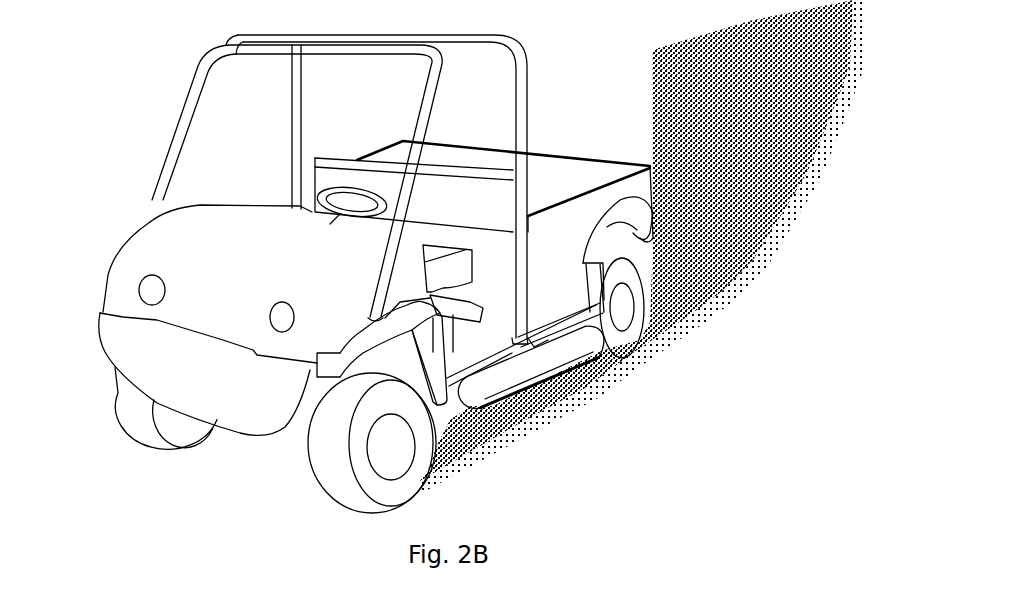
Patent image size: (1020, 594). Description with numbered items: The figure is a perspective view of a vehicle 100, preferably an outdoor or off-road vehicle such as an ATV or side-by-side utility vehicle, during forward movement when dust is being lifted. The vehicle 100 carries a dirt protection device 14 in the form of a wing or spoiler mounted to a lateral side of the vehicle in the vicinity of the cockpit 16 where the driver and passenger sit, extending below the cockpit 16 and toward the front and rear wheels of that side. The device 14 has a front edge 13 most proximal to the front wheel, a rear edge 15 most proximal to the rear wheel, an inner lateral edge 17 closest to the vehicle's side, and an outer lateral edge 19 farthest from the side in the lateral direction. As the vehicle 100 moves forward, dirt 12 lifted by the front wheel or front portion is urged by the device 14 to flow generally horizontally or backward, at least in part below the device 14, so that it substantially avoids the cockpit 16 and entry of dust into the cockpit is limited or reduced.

The vehicle 100 is at (357, 263).
The dirt 12 is at (705, 338).
The front edge 13 is at (467, 405).
The dirt protection device 14 is at (494, 415).
The rear edge 15 is at (602, 335).
The cockpit 16 is at (494, 135).
The inner lateral edge 17 is at (522, 334).
The outer lateral edge 19 is at (539, 371).